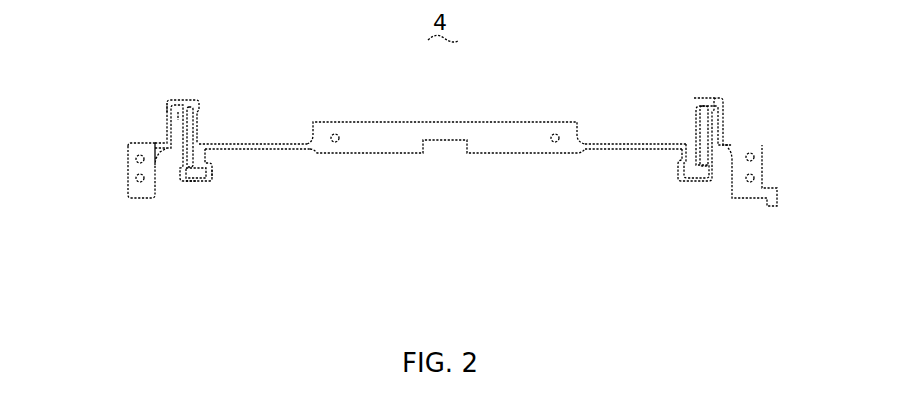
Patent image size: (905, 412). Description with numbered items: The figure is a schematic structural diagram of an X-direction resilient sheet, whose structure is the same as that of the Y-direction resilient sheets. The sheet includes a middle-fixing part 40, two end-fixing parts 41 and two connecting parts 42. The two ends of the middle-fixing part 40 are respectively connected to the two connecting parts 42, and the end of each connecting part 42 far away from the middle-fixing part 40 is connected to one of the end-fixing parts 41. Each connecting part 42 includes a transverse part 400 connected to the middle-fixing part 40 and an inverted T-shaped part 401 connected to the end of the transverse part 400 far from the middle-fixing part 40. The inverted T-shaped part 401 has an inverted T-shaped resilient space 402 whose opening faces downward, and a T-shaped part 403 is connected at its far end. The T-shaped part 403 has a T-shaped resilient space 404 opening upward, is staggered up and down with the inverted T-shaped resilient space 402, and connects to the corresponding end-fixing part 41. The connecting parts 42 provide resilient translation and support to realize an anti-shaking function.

The middle-fixing part 40 is at (395, 140).
The transverse part 400 is at (262, 152).
The end-fixing part 41 is at (128, 162).
The connecting part 42 is at (407, 210).
The inverted T-shaped part 401 is at (190, 183).
The inverted T-shaped resilient space 402 is at (233, 207).
The T-shaped part 403 is at (168, 113).
The T-shaped resilient space 404 is at (178, 121).